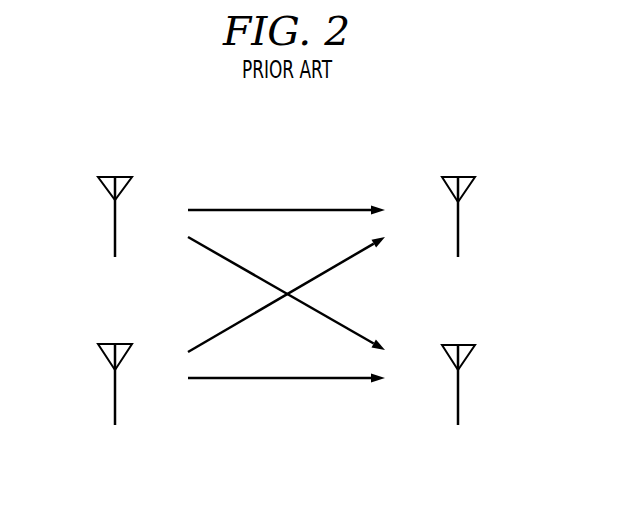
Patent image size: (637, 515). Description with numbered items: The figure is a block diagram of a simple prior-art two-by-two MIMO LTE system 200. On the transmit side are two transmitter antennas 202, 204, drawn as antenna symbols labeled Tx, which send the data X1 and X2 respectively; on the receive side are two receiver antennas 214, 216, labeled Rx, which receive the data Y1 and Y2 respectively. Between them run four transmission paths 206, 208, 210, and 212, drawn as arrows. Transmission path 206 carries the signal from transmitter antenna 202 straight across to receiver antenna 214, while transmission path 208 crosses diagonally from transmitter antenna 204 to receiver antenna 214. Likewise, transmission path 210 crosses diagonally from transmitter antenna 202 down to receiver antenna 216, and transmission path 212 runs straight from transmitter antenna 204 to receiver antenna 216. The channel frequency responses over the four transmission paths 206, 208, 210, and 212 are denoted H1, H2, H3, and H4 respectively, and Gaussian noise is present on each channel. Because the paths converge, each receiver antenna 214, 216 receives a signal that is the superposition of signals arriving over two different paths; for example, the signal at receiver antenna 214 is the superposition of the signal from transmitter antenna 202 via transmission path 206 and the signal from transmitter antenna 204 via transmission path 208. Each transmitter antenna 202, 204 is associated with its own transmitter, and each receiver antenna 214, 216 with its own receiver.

The two-by-two MIMO LTE system 200 is at (303, 117).
The transmitter antenna 202 is at (113, 231).
The transmitter antenna 204 is at (113, 396).
The transmission path 206 is at (287, 209).
The transmission path 208 is at (251, 317).
The transmission path 210 is at (247, 271).
The transmission path 212 is at (287, 379).
The receiver antenna 214 is at (460, 232).
The receiver antenna 216 is at (460, 398).